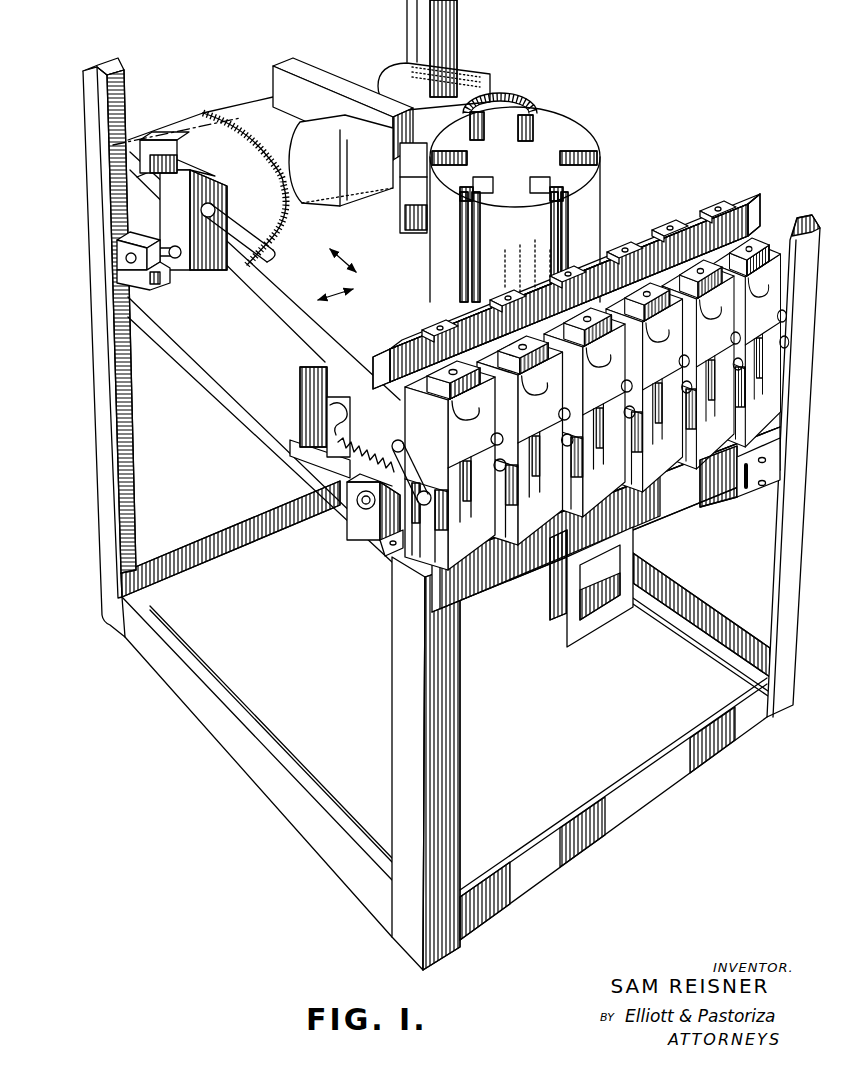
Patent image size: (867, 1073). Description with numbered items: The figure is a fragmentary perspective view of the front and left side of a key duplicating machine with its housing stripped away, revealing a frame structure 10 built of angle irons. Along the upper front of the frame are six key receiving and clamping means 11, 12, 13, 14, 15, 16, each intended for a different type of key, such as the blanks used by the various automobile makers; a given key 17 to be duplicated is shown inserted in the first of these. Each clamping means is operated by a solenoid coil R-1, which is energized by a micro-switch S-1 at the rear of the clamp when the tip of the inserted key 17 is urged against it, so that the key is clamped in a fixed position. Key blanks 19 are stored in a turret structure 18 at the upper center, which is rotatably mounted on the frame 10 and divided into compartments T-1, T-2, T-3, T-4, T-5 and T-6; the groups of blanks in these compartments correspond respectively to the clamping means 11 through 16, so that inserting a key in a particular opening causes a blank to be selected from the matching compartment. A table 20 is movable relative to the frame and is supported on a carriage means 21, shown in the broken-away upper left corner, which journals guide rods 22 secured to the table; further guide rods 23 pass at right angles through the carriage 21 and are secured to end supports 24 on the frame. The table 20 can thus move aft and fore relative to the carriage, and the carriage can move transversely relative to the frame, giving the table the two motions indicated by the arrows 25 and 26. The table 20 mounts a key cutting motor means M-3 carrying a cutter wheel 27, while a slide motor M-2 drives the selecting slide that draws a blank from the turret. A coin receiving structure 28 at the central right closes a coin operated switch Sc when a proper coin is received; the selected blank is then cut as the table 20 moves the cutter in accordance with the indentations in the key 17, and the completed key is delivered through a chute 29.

The frame structure 10 is at (413, 683).
The key receiving and clamping means 11 is at (481, 416).
The key receiving and clamping means 12 is at (545, 385).
The key receiving and clamping means 13 is at (614, 350).
The key receiving and clamping means 14 is at (674, 323).
The key receiving and clamping means 15 is at (720, 302).
The key receiving and clamping means 16 is at (768, 278).
The key 17 is at (510, 545).
The turret structure 18 is at (564, 133).
The duplicating key blanks 19 is at (585, 230).
The table 20 is at (278, 300).
The carriage means 21 is at (193, 168).
The guide rods 22 is at (252, 238).
The guide rods 23 is at (215, 236).
The end supports 24 is at (140, 275).
The arrow 25 is at (353, 250).
The arrow 26 is at (348, 300).
The cutter wheel 27 is at (524, 101).
The coin receiving structure 28 is at (752, 477).
The chute 29 is at (598, 600).
The slide motor M-2 is at (317, 175).
The key cutting motor means M-3 is at (408, 75).
The solenoid coil R-1 is at (337, 420).
The micro-switch S-1 is at (432, 350).
The coin operated switch Sc is at (717, 484).
The compartment T-1 is at (498, 103).
The compartment T-2 is at (451, 152).
The compartment T-3 is at (463, 200).
The compartment T-4 is at (566, 196).
The compartment T-5 is at (598, 151).
The compartment T-6 is at (536, 128).